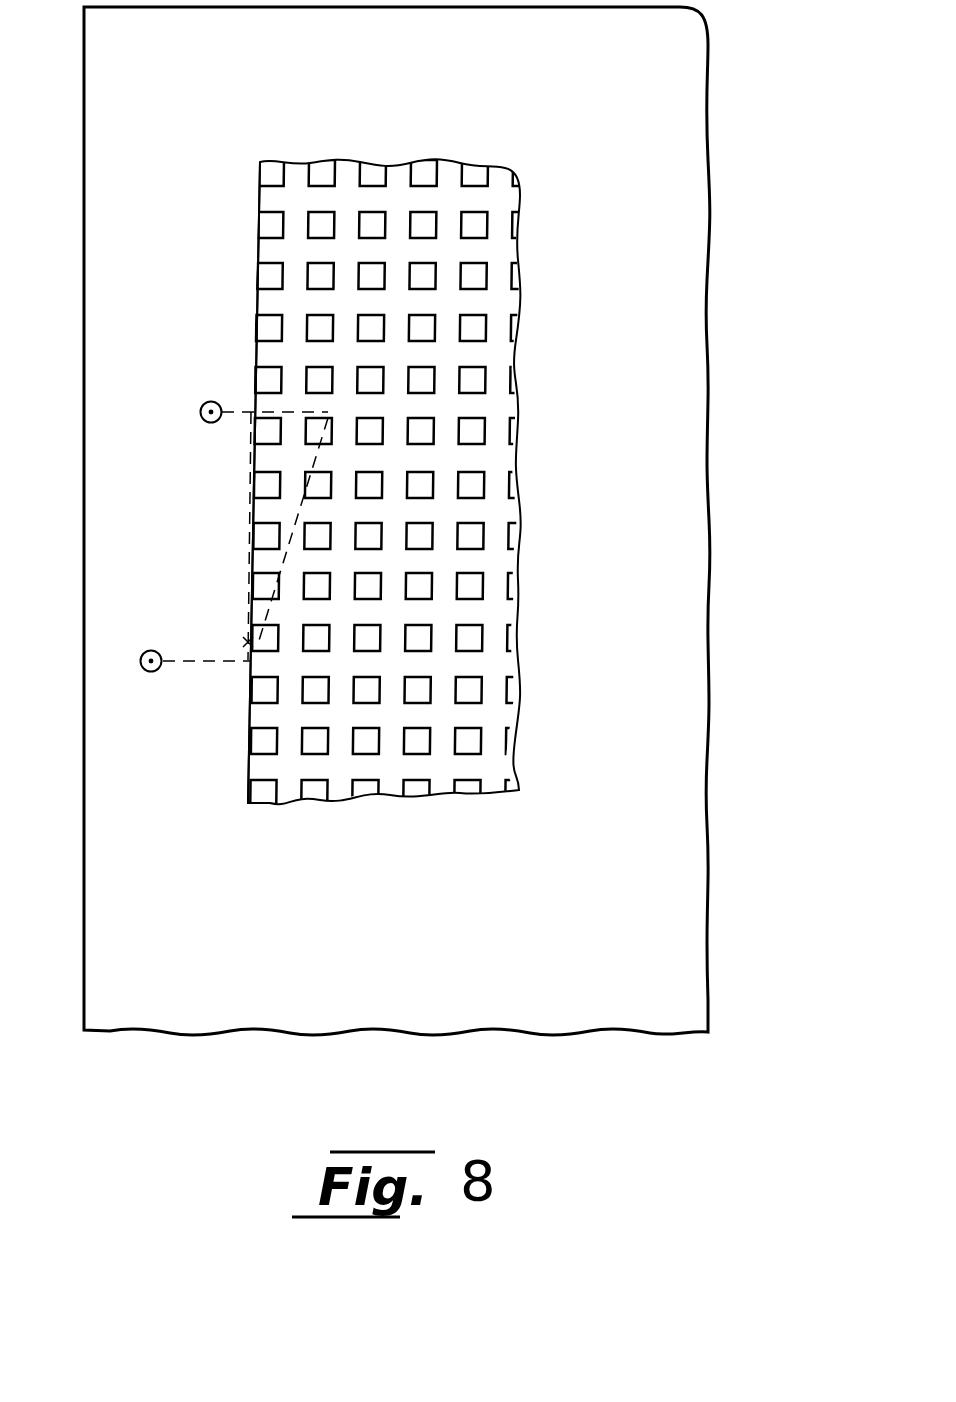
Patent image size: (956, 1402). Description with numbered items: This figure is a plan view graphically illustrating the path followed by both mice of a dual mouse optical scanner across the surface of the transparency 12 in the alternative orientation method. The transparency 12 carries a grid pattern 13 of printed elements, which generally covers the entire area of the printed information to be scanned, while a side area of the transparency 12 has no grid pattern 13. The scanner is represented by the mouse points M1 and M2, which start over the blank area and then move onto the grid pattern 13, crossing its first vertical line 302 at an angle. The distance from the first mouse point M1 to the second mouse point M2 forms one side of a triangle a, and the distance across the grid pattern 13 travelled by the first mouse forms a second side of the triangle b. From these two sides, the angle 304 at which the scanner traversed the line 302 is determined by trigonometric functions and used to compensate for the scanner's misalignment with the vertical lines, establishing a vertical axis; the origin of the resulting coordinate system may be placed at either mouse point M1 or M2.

The transparency 12 is at (708, 197).
The grid pattern 13 is at (517, 383).
The first vertical line 302 is at (262, 797).
The angle 304 is at (250, 638).
The first mouse point M1 is at (200, 411).
The second mouse point M2 is at (150, 650).
The side of triangle a is at (310, 505).
The second side of triangle b is at (268, 405).